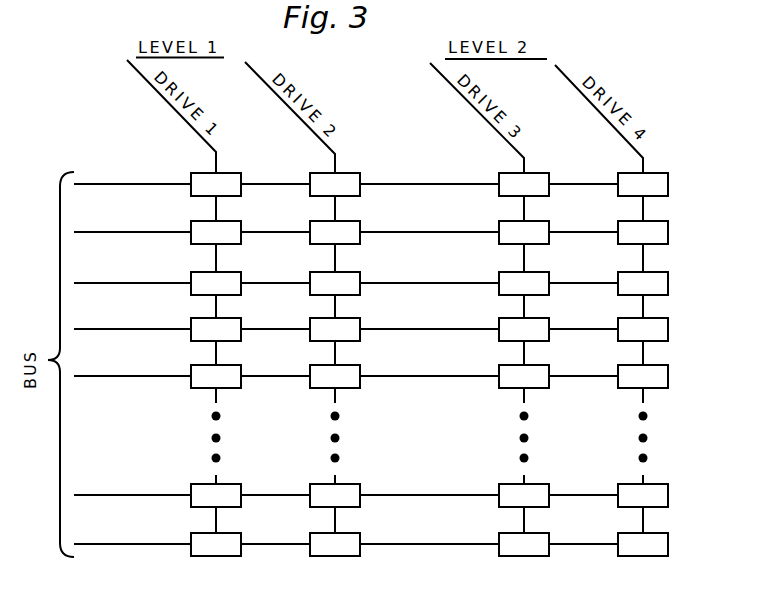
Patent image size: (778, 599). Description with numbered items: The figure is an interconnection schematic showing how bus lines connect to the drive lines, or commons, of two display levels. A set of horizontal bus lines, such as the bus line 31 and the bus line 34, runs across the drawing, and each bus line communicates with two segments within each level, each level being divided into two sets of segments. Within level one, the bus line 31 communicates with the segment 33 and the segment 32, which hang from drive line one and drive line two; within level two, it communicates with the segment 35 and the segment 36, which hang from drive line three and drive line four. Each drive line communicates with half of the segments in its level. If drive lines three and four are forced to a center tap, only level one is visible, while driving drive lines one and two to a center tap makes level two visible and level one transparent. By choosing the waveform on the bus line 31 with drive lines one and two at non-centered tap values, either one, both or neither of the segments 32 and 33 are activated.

The bus line 31 is at (172, 183).
The segment 32 is at (348, 181).
The segment 33 is at (230, 181).
The bus line 34 is at (172, 232).
The segment 35 is at (535, 181).
The segment 36 is at (655, 181).